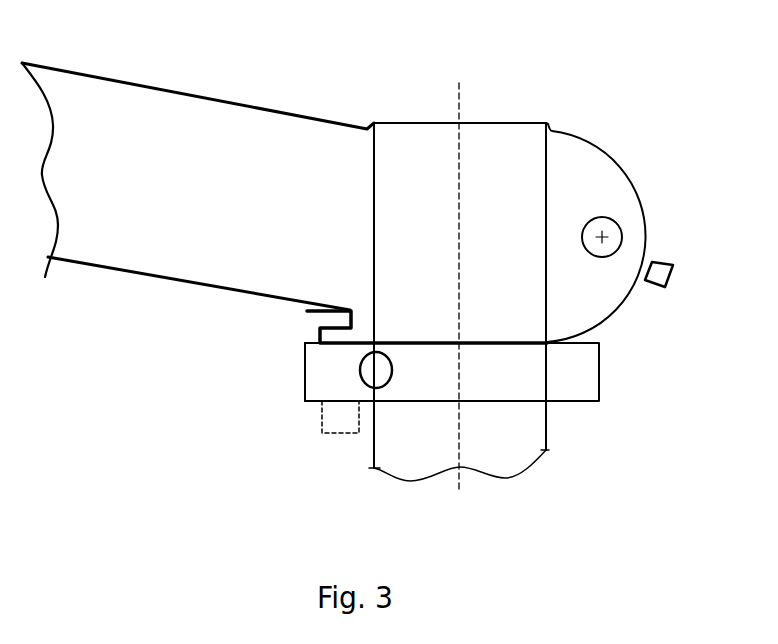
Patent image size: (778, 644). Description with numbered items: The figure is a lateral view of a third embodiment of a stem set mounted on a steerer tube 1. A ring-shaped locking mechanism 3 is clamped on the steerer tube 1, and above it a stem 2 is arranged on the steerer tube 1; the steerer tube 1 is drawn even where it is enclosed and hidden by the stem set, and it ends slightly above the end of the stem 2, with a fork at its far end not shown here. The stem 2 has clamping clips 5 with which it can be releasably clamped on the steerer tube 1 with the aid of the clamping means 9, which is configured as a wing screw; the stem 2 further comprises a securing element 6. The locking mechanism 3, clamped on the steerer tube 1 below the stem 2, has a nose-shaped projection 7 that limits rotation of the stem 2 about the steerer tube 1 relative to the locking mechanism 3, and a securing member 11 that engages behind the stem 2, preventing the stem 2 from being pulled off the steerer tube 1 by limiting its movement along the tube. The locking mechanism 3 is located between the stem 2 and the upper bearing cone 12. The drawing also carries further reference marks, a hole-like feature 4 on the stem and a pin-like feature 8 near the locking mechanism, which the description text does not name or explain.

The steerer tube 1 is at (504, 328).
The stem 2 is at (245, 268).
The locking mechanism 3 is at (582, 380).
The hole 4 is at (607, 218).
The clamping clips 5 is at (647, 184).
The securing element 6 is at (312, 330).
The nose-shaped projection 7 is at (332, 430).
The pin 8 is at (378, 384).
The clamping means 9 is at (660, 288).
The securing member 11 is at (327, 320).
The upper bearing cone 12 is at (405, 482).